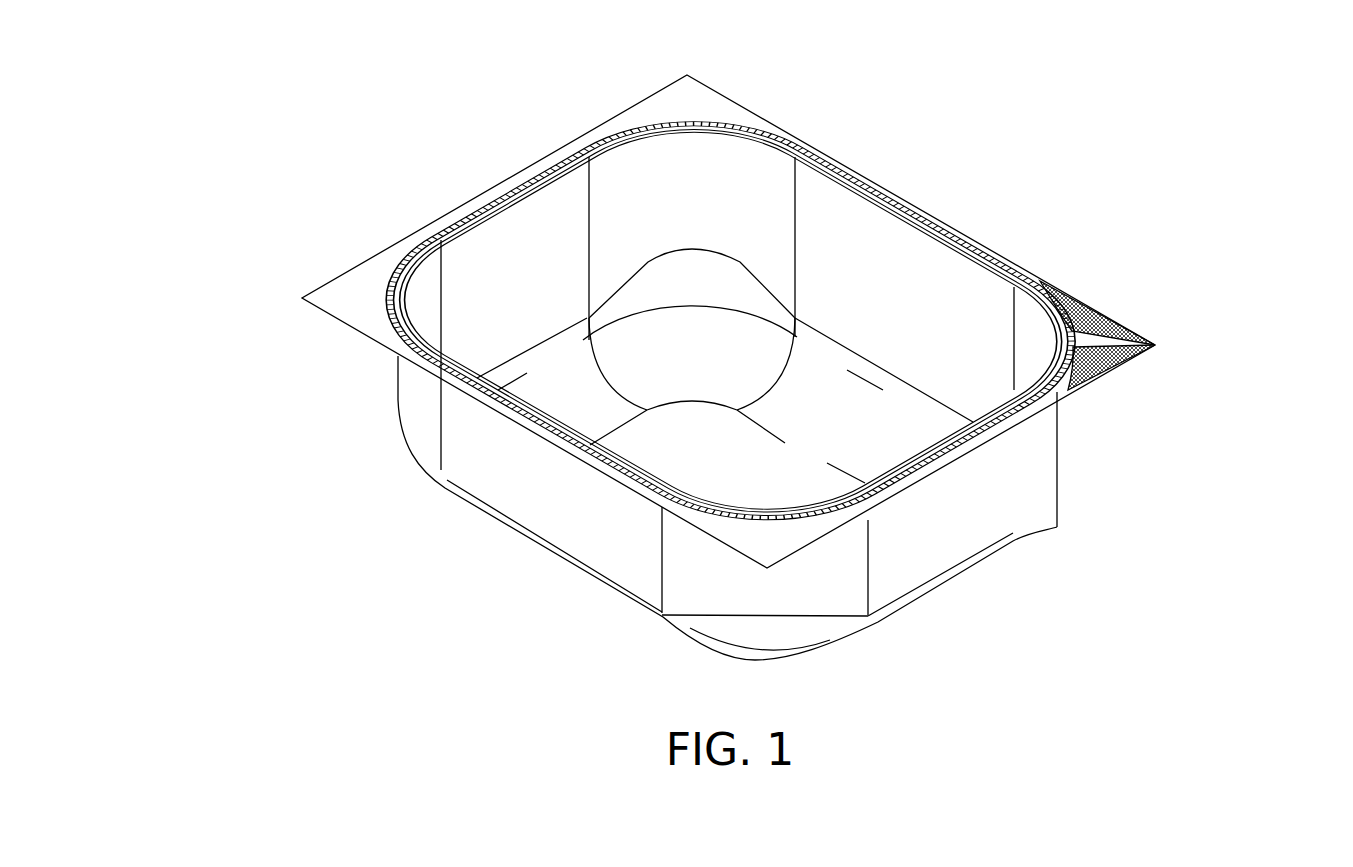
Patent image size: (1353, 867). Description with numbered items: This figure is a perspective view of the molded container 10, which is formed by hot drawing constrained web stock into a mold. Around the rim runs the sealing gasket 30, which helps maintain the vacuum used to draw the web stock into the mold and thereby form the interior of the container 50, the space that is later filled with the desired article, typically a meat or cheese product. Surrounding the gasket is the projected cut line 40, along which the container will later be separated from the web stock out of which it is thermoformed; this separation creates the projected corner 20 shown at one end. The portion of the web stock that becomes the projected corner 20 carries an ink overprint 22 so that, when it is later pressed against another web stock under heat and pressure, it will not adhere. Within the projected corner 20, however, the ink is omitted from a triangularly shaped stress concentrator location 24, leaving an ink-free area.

The molded container 10 is at (232, 397).
The projected corner 20 is at (1114, 378).
The ink overprint 22 is at (1098, 300).
The stress concentrator location 24 is at (1118, 350).
The sealing gasket 30 is at (872, 186).
The projected cut line 40 is at (496, 176).
The interior of the container 50 is at (862, 262).